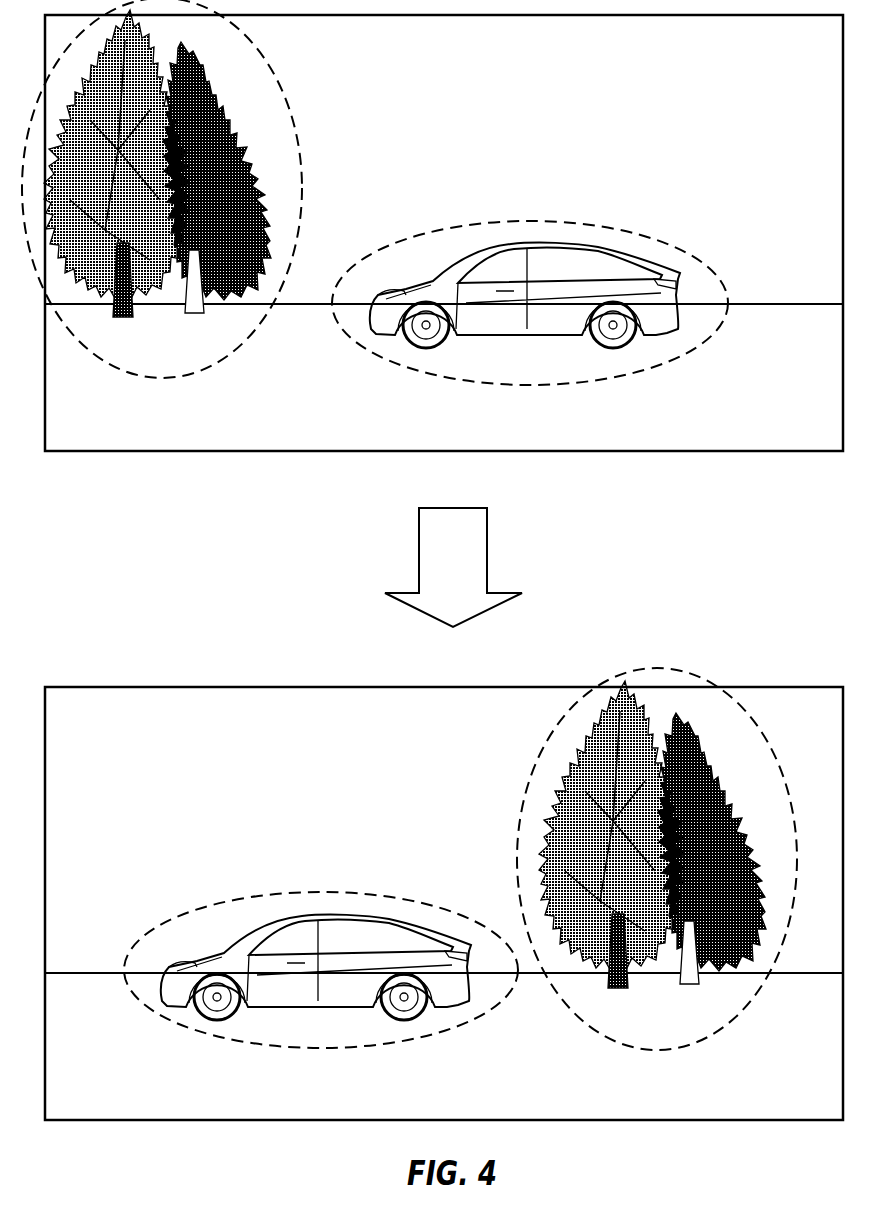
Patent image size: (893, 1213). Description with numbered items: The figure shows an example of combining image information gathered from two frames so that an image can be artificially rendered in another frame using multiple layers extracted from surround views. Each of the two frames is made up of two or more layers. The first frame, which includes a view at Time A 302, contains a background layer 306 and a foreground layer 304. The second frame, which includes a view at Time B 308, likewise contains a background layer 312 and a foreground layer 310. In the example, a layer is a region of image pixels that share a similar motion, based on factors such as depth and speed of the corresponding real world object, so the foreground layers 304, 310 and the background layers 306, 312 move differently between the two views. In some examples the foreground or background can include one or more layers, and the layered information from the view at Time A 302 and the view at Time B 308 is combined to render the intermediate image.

The view at Time A 302 is at (444, 233).
The foreground layer 304 is at (622, 233).
The background layer 306 is at (285, 102).
The view at Time B 308 is at (444, 903).
The foreground layer 310 is at (288, 893).
The background layer 312 is at (522, 803).